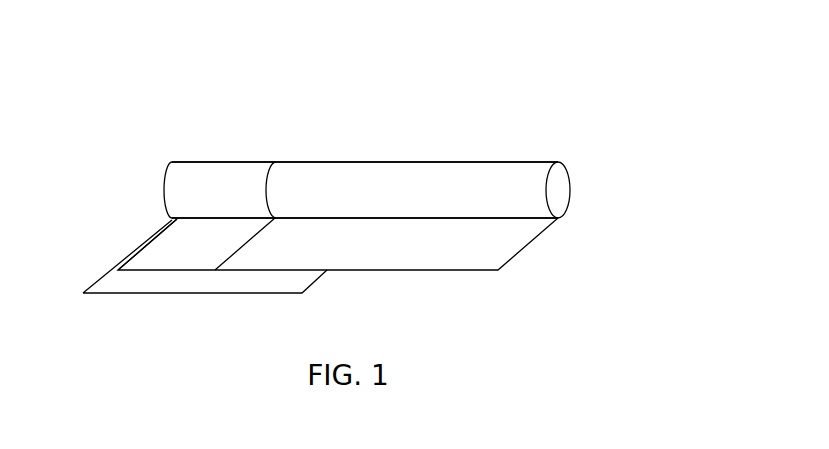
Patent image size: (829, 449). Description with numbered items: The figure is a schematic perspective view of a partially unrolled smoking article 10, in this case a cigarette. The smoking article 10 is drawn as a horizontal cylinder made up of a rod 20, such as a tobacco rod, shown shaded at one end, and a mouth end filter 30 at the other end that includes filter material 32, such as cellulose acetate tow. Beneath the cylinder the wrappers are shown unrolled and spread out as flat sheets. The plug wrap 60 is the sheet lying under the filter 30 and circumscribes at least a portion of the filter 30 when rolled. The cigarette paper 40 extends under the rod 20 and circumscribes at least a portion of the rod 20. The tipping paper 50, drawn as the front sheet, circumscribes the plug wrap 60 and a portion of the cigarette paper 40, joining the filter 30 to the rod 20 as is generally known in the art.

The smoking article 10 is at (590, 46).
The rod 20 is at (515, 172).
The mouth end filter 30 is at (245, 136).
The filter material 32 is at (198, 163).
The cigarette paper 40 is at (503, 242).
The tipping paper 50 is at (123, 283).
The plug wrap 60 is at (177, 237).